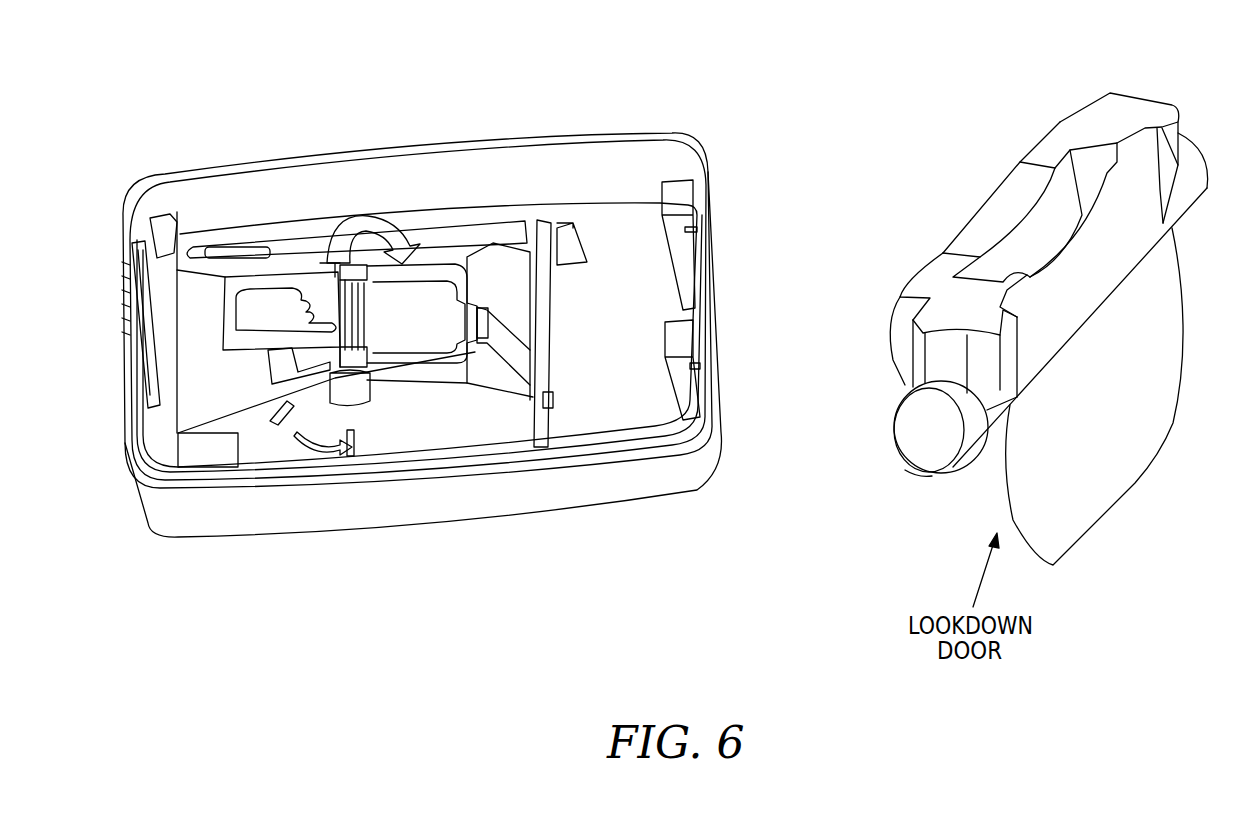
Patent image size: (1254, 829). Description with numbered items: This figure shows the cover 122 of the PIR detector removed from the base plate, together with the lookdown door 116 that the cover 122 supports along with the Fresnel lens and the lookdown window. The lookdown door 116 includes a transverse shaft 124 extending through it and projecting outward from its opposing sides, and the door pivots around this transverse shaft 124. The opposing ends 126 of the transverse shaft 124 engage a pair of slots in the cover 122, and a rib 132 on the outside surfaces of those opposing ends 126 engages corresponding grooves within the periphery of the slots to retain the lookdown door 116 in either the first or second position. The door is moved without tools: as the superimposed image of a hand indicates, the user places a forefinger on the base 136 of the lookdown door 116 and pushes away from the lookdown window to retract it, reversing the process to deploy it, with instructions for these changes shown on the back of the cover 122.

The cover 122 is at (712, 128).
The lookdown door 116 is at (357, 345).
The base of the lookdown door 136 is at (970, 197).
The opposing ends of the transverse shaft 126 is at (887, 388).
The transverse shaft 124 is at (880, 463).
The rib 132 is at (927, 483).